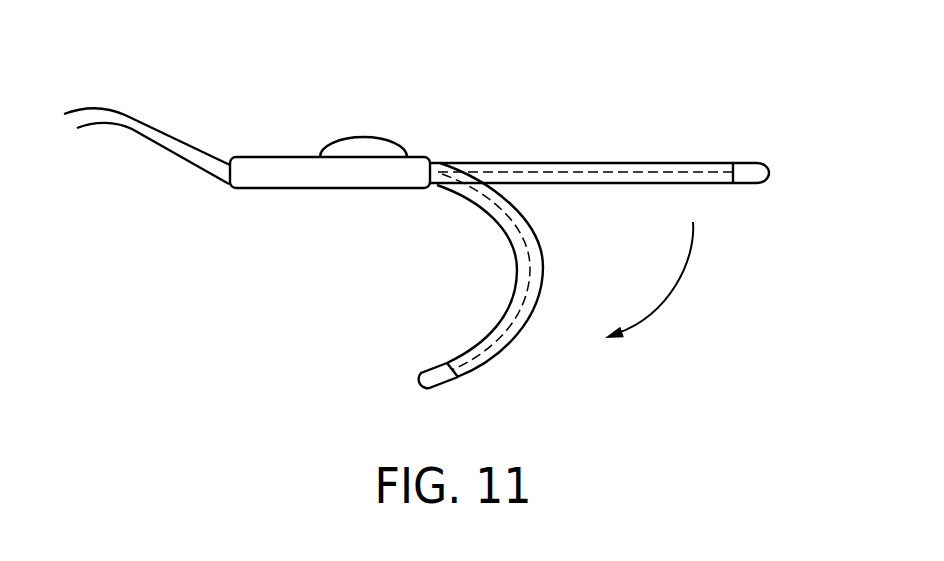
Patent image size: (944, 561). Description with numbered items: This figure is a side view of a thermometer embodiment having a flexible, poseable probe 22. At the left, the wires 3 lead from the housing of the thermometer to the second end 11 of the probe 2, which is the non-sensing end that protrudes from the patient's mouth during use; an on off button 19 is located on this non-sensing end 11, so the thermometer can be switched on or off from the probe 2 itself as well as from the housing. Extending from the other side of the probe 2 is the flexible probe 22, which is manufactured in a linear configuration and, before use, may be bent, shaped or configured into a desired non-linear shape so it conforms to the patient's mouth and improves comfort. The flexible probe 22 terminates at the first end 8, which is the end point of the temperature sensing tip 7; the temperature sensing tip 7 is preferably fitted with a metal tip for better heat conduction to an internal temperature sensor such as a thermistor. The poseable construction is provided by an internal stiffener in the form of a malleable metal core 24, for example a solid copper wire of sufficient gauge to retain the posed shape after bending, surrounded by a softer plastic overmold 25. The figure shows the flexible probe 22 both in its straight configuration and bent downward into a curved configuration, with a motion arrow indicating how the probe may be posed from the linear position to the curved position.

The wires 3 is at (115, 111).
The second end 11 is at (330, 155).
The probe 2 is at (309, 173).
The on off button 19 is at (353, 133).
The flexible probe 22 is at (514, 162).
The plastic overmold 25 is at (590, 165).
The temperature sensing tip 7 is at (745, 176).
The first end 8 is at (617, 227).
The malleable metal core 24 is at (522, 237).